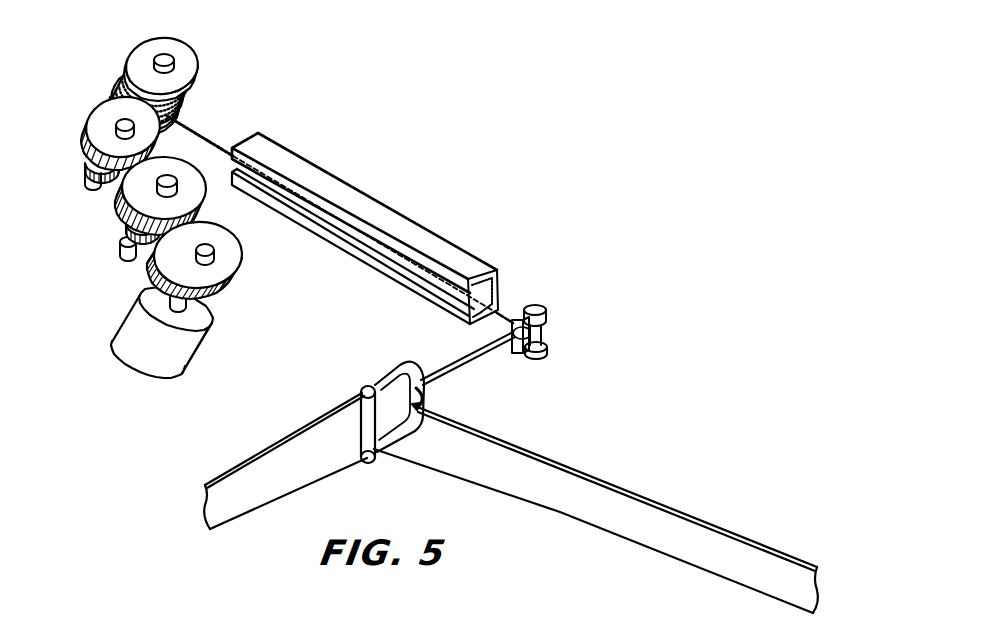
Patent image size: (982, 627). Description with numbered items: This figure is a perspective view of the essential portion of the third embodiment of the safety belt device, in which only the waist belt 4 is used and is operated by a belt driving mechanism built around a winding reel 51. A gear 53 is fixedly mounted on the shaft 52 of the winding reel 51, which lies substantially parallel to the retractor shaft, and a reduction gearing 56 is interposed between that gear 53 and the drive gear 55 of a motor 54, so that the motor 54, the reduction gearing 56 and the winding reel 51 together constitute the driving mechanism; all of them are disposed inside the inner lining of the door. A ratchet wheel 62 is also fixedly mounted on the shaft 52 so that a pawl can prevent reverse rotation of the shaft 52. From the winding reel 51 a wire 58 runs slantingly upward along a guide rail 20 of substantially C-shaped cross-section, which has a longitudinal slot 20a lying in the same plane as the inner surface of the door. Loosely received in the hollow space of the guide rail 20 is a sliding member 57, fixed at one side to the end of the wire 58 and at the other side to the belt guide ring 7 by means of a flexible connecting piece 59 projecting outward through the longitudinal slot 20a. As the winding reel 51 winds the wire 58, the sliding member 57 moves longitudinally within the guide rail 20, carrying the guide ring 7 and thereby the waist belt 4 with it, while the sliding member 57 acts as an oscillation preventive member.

The waist belt 4 is at (590, 470).
The belt guide ring 7 is at (357, 378).
The guide rail 20 is at (405, 220).
The longitudinal slot 20a is at (392, 262).
The winding reel 51 is at (137, 46).
The shaft 52 is at (174, 56).
The gear 53 is at (85, 158).
The motor 54 is at (194, 345).
The drive gear 55 is at (243, 252).
The reduction gearing 56 is at (125, 213).
The sliding member 57 is at (551, 328).
The wire 58 is at (209, 131).
The flexible connecting piece 59 is at (470, 368).
The ratchet wheel 62 is at (97, 110).